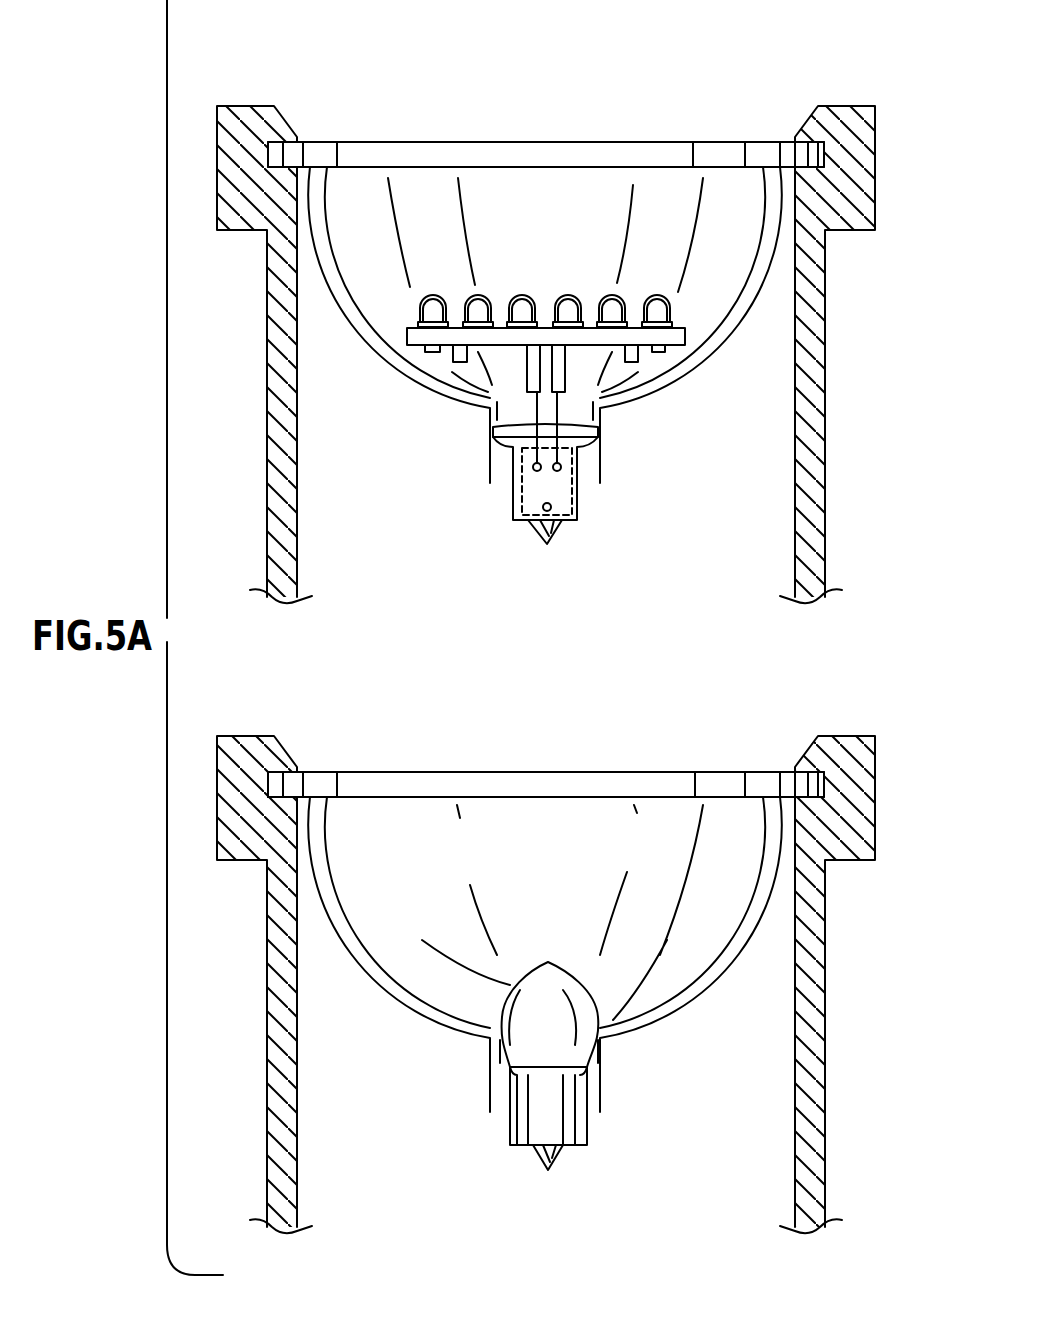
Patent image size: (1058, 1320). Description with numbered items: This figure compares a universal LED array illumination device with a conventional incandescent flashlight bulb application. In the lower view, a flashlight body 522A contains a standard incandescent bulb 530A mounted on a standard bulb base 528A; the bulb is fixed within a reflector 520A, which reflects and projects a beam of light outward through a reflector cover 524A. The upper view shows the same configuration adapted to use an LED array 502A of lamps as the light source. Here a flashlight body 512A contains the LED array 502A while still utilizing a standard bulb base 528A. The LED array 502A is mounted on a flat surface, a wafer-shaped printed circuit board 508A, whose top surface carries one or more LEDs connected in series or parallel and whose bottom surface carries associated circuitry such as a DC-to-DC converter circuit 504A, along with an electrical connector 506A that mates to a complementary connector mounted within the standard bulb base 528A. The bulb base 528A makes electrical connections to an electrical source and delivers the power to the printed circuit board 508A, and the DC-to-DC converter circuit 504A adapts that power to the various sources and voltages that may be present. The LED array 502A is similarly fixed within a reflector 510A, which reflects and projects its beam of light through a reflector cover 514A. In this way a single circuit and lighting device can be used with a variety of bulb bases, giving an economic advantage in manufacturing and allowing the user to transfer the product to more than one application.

The LED array 502A is at (557, 292).
The DC-to-DC converter circuit 504A is at (437, 356).
The connector 506A is at (492, 428).
The printed circuit (PC) board 508A is at (670, 392).
The reflector 510A is at (716, 352).
The flashlight body 512A is at (808, 118).
The reflector cover 514A is at (582, 142).
The reflector 520A is at (413, 1013).
The flashlight body 522A is at (302, 1140).
The reflector cover 524A is at (448, 772).
The standard bulb base 528A is at (597, 497).
The standard incandescent bulb 530A is at (560, 972).